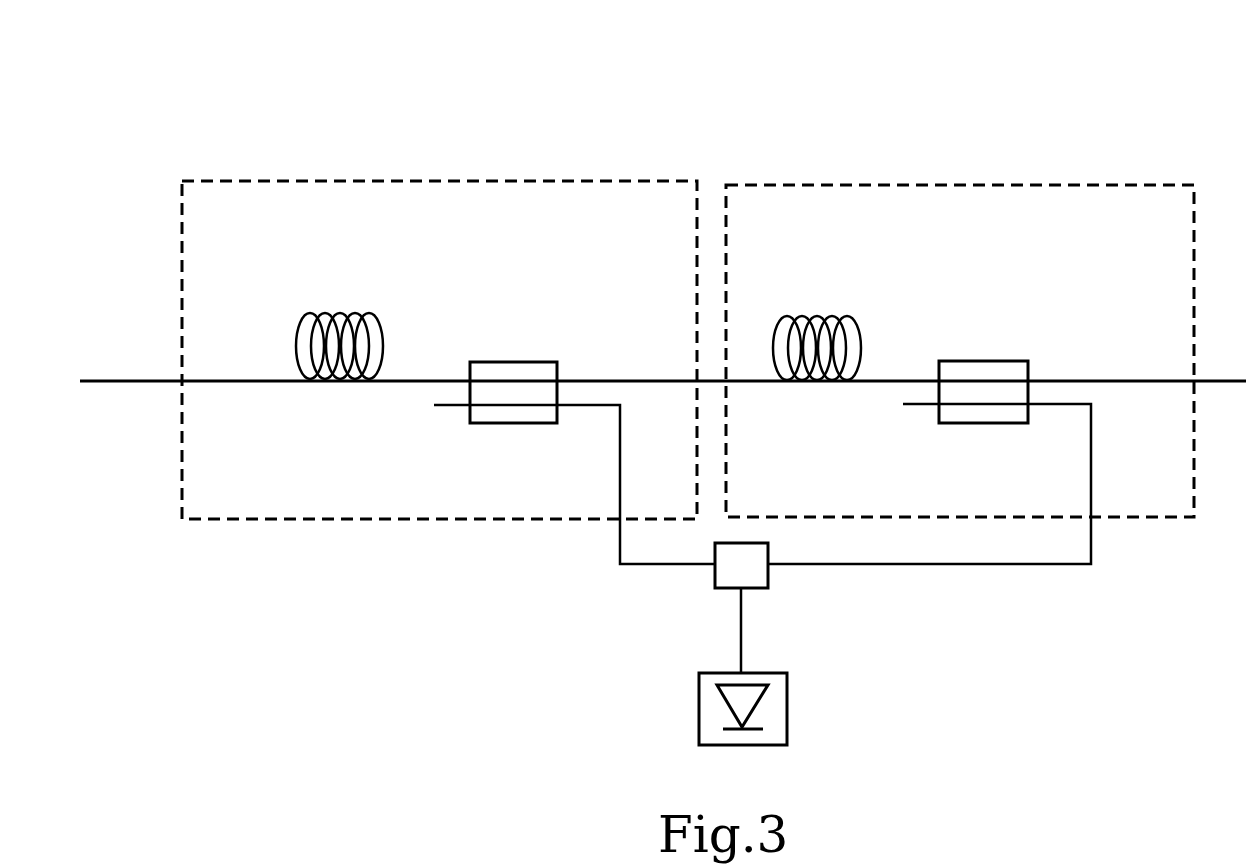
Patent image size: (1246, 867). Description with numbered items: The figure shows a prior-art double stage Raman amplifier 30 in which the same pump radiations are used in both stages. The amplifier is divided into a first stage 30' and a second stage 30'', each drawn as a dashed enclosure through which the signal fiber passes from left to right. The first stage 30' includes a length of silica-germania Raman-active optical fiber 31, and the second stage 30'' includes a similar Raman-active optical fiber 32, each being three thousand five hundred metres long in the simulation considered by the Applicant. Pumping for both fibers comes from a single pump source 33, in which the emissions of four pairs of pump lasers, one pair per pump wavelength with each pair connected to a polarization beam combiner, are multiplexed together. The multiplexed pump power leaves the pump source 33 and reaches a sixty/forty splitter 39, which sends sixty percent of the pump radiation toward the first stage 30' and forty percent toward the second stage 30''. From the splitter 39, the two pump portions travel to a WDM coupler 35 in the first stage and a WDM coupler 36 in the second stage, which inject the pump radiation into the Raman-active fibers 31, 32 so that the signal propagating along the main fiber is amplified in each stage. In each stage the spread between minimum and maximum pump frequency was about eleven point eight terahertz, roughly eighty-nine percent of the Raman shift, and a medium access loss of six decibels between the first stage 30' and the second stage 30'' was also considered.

The Raman amplifier 30 is at (663, 191).
The first stage 30' is at (439, 298).
The second stage 30'' is at (960, 294).
The Raman-active optical fiber 31 is at (360, 312).
The Raman-active optical fiber 32 is at (838, 316).
The pump source 33 is at (695, 705).
The WDM coupler 35 is at (545, 362).
The WDM coupler 36 is at (1017, 361).
The 60/40 splitter 39 is at (770, 580).